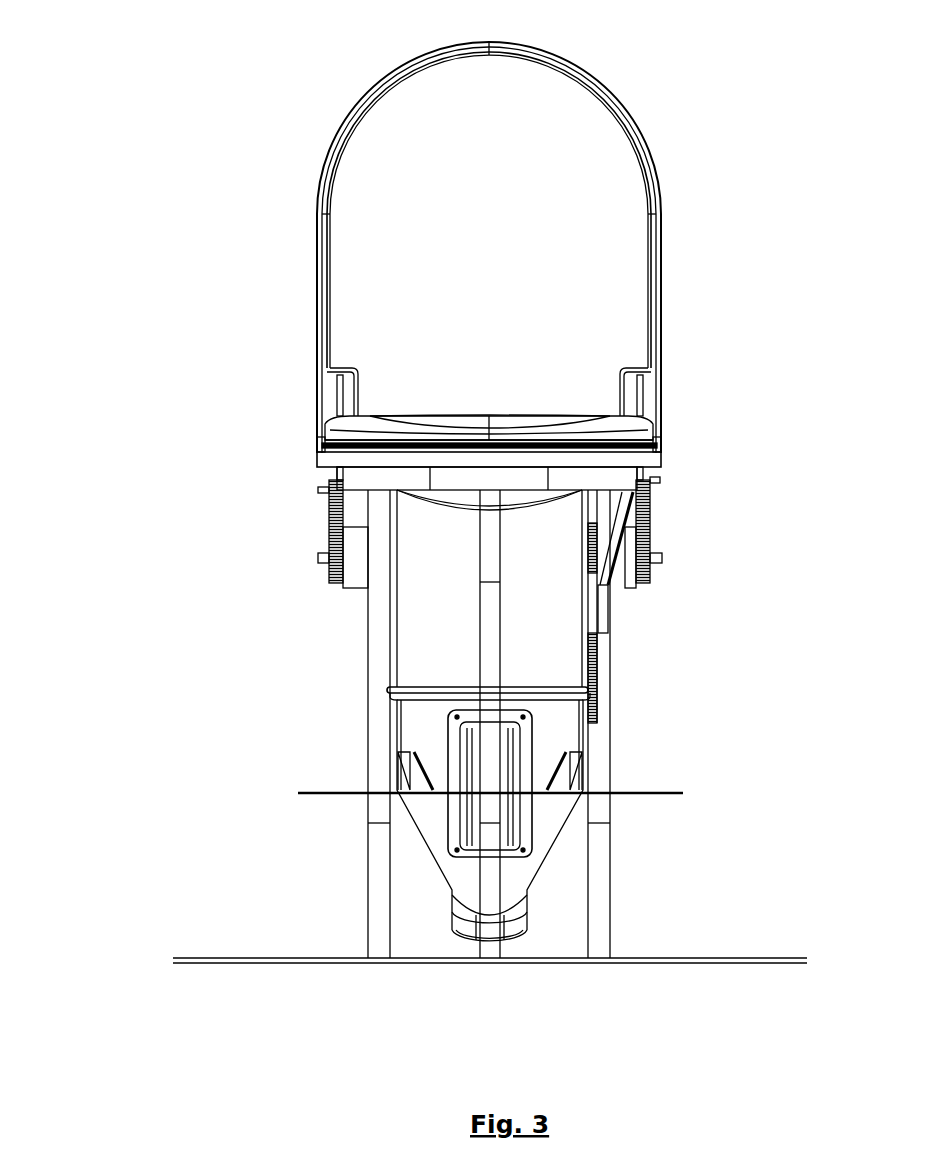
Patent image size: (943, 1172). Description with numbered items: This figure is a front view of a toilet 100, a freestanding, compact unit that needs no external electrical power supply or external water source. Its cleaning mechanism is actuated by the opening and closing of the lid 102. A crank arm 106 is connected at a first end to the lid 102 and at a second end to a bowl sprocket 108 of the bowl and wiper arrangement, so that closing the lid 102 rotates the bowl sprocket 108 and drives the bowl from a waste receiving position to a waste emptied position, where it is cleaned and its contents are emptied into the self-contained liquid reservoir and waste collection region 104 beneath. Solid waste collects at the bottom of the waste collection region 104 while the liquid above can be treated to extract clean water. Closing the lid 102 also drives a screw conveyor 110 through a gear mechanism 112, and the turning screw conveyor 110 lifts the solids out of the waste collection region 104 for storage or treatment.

The toilet 100 is at (183, 120).
The lid 102 is at (645, 137).
The waste collection region 104 is at (522, 876).
The crank arm 106 is at (608, 597).
The bowl sprocket 108 is at (600, 563).
The screw conveyor 110 is at (445, 908).
The gear mechanism 112 is at (316, 540).